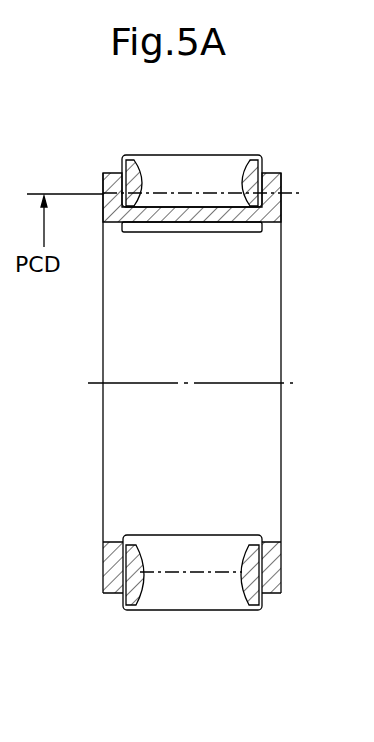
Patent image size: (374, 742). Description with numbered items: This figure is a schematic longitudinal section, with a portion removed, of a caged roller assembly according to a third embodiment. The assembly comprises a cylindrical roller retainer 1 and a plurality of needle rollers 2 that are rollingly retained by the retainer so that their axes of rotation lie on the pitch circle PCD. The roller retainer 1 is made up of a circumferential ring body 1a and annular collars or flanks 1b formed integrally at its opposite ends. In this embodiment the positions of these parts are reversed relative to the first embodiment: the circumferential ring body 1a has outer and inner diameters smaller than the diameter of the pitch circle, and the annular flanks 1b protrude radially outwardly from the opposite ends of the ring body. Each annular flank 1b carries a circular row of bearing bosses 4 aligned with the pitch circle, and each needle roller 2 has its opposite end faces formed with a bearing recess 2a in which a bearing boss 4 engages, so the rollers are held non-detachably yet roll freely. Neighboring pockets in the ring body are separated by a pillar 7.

The roller retainer 1 is at (104, 155).
The circumferential ring body 1a is at (272, 222).
The annular flank 1b is at (103, 180).
The needle roller 2 is at (195, 173).
The bearing recess 2a is at (137, 165).
The bearing boss 4 is at (118, 198).
The pillar 7 is at (158, 230).